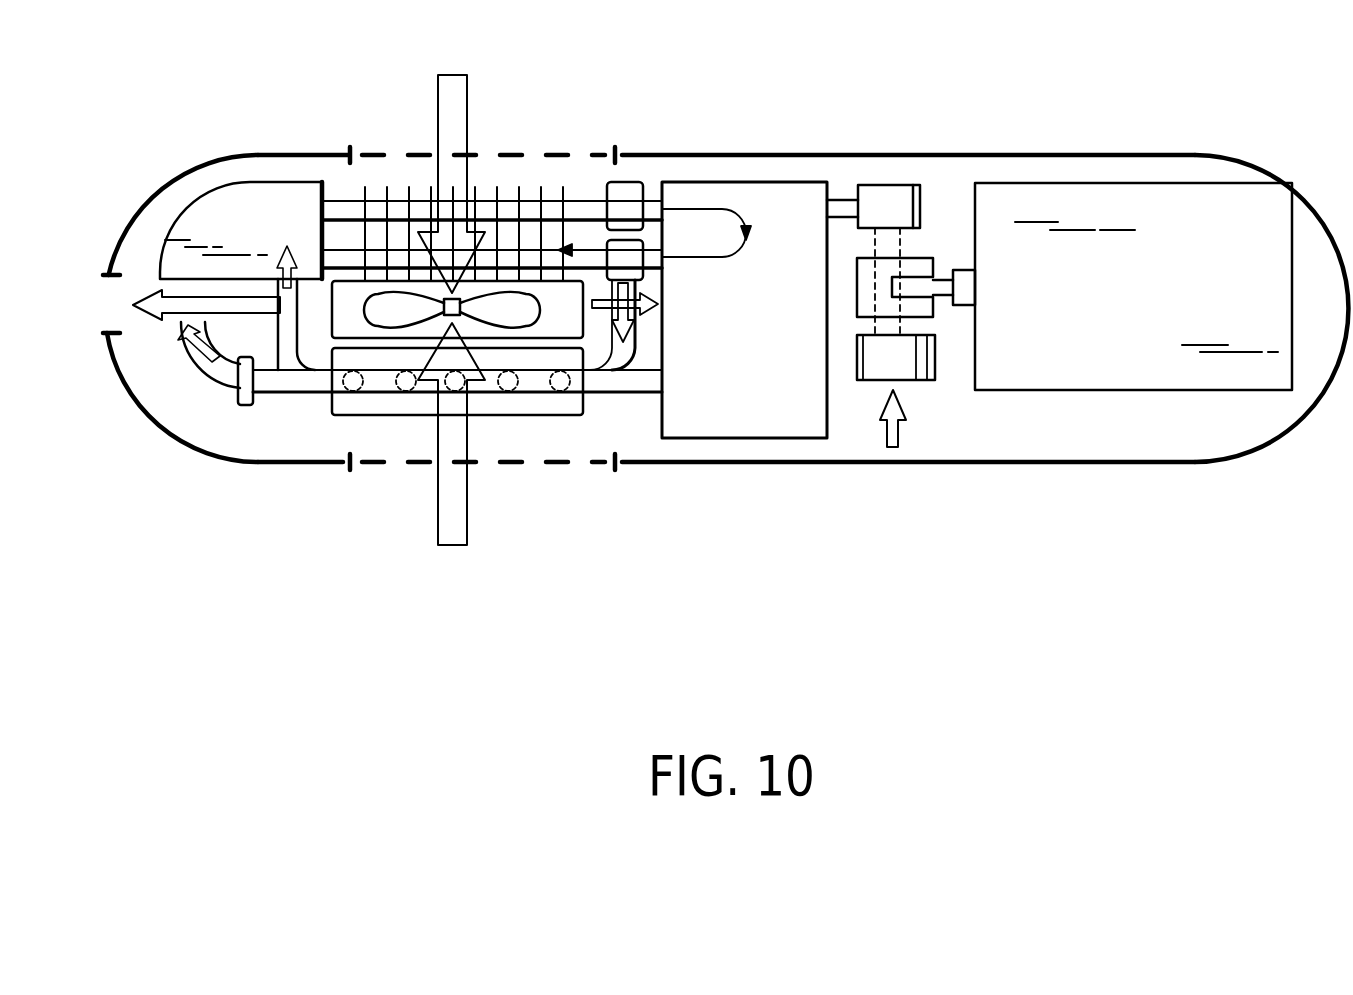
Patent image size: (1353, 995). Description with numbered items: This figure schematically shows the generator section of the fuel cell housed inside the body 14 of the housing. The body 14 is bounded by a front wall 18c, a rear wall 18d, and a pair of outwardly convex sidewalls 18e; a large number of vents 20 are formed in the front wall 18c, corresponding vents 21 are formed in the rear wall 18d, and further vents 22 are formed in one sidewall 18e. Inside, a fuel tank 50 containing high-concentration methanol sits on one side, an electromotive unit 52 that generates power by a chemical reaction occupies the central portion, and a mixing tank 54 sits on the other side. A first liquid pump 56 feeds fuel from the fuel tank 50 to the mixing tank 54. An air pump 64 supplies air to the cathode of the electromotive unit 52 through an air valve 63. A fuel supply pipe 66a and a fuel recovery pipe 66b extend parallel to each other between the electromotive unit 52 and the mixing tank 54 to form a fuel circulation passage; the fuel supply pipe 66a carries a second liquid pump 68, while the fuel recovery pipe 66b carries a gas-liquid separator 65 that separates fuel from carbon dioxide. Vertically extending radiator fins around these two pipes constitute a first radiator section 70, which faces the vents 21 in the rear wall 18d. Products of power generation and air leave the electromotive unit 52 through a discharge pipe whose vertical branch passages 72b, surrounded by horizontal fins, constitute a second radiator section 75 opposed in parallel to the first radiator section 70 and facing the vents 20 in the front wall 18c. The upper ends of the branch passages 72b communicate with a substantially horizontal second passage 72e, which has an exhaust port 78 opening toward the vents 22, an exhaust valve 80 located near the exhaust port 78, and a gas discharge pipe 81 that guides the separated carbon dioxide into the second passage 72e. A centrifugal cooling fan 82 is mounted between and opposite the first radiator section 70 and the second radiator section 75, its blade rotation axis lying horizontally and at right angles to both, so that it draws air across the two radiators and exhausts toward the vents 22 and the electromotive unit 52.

The body 14 is at (1100, 465).
The front wall 18c is at (860, 465).
The rear wall 18d is at (763, 153).
The sidewall 18e is at (143, 210).
The vents 20 is at (510, 466).
The vents 21 is at (356, 148).
The vents 22 is at (110, 300).
The fuel tank 50 is at (1140, 210).
The electromotive unit 52 is at (770, 432).
The mixing tank 54 is at (207, 212).
The first liquid pump 56 is at (925, 256).
The air valve 63 is at (890, 195).
The air pump 64 is at (935, 382).
The gas-liquid separator 65 is at (655, 273).
The fuel supply pipe 66a is at (513, 195).
The fuel recovery pipe 66b is at (555, 252).
The second liquid pump 68 is at (628, 180).
The first radiator section 70 is at (406, 177).
The branch passages 72b is at (512, 402).
The second passage 72e is at (292, 396).
The second radiator section 75 is at (350, 415).
The exhaust port 78 is at (170, 336).
The exhaust valve 80 is at (240, 407).
The gas discharge pipe 81 is at (640, 352).
The cooling fan 82 is at (353, 283).